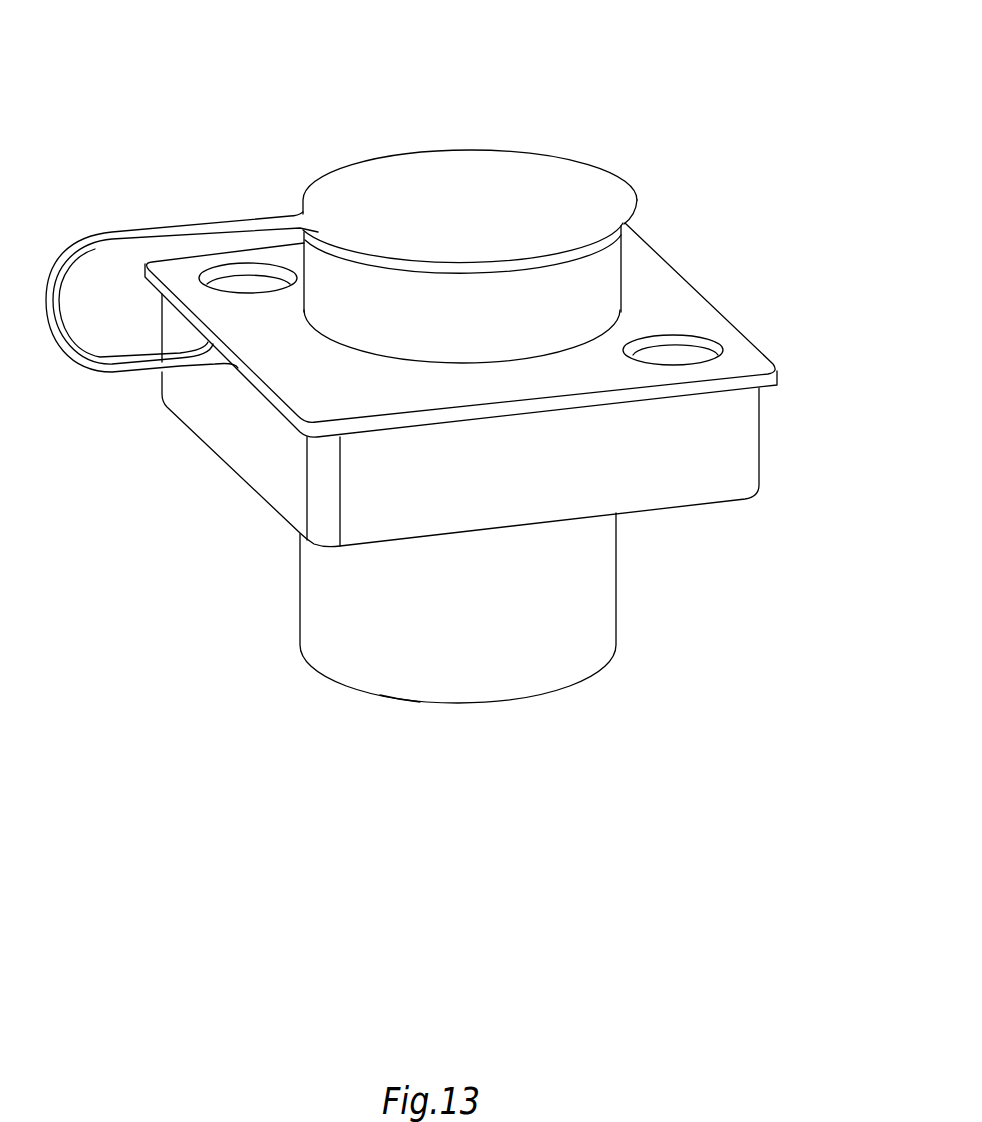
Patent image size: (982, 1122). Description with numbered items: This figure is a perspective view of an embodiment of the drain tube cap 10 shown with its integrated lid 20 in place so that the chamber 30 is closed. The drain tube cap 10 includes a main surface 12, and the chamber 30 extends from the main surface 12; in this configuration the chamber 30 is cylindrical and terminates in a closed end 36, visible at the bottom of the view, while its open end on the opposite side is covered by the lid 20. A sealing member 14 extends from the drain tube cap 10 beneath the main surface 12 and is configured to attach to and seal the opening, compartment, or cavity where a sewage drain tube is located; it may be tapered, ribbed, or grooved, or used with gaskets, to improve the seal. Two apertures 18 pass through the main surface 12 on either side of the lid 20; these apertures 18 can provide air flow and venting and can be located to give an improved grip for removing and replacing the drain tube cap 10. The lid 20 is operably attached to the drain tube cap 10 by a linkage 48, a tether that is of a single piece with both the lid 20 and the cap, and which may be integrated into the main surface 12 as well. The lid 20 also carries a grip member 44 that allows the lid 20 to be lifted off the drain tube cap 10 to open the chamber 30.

The drain tube cap 10 is at (612, 40).
The main surface 12 is at (680, 298).
The sealing member 14 is at (745, 460).
The aperture 18 is at (695, 358).
The lid 20 is at (592, 183).
The chamber 30 is at (314, 585).
The closed end 36 is at (368, 690).
The grip member 44 is at (637, 214).
The linkage 48 is at (110, 232).